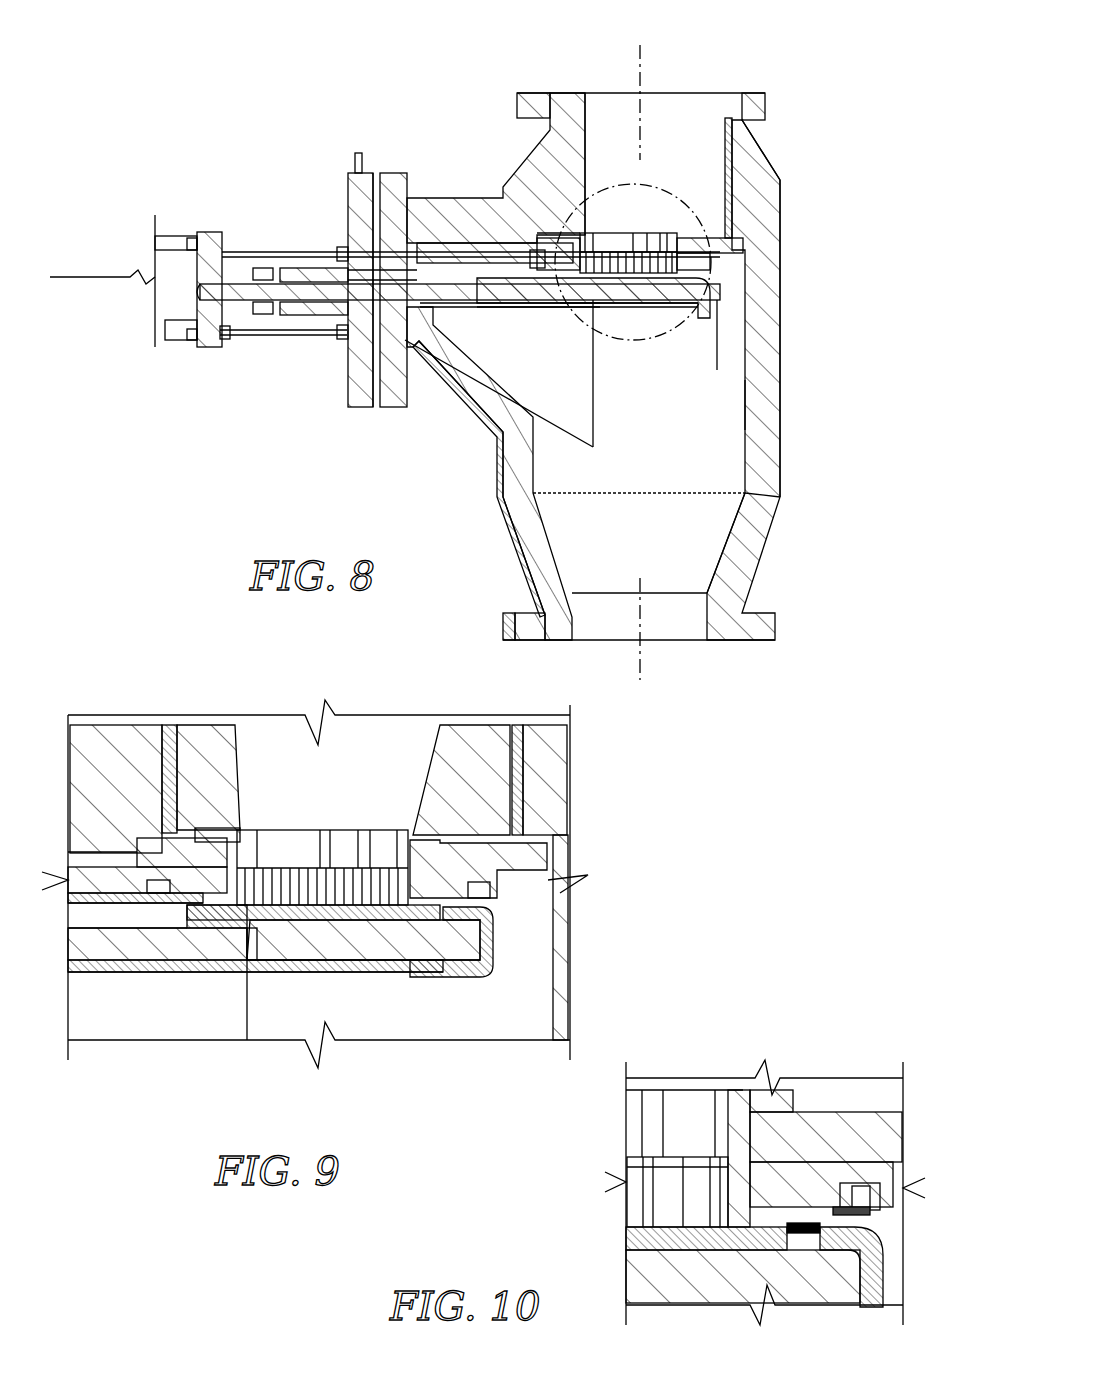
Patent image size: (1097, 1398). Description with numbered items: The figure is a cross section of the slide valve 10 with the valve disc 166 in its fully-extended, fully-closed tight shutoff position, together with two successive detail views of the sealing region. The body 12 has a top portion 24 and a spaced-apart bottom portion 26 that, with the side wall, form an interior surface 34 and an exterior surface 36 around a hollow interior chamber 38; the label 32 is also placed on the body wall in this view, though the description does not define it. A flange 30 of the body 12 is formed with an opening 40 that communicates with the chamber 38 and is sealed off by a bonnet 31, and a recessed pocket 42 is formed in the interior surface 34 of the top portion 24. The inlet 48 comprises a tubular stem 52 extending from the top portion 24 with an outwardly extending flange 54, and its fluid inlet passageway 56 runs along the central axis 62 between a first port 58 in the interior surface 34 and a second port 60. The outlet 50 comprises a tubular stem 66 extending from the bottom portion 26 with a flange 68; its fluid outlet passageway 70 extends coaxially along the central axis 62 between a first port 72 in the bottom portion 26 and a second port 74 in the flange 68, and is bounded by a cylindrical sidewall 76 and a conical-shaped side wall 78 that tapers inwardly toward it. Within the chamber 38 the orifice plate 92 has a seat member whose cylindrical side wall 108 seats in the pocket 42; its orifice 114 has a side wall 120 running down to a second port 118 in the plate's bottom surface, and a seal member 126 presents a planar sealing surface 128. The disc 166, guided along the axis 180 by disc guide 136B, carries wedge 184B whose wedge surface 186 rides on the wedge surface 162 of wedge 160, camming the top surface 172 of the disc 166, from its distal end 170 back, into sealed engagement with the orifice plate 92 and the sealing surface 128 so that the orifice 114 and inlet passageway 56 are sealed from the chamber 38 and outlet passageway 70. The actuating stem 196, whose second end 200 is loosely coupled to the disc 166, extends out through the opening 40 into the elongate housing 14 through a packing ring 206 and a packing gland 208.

In FIG. 8, the valve 10 is at (155, 130).
In FIG. 8, the body 12 is at (325, 148).
In FIG. 8, the elongate housing 14 is at (175, 212).
In FIG. 8, the top portion 24 is at (766, 192).
In FIG. 8, the bottom portion 26 is at (762, 562).
In FIG. 8, the flange 30 is at (725, 475).
In FIG. 8, the bonnet 31 is at (368, 378).
In FIG. 8, the body side wall 32 is at (765, 388).
In FIG. 8, the interior surface 34 is at (752, 425).
In FIG. 8, the exterior surface 36 is at (770, 470).
In FIG. 8, the hollow interior chamber 38 is at (737, 335).
In FIG. 8, the opening 40 is at (430, 376).
In FIG. 8, the recessed pocket 42 is at (737, 283).
In FIG. 8, the inlet 48 is at (752, 80).
In FIG. 8, the outlet 50 is at (750, 650).
In FIG. 8, the tubular stem 52 is at (742, 135).
In FIG. 8, the outwardly extending flange 54 is at (765, 105).
In FIG. 8, the fluid inlet passageway 56 is at (602, 98).
In FIG. 8, the first port 58 is at (658, 238).
In FIG. 8, the second port 60 is at (680, 250).
In FIG. 8, the central axis 62 is at (645, 55).
In FIG. 8, the tubular stem 66 is at (760, 592).
In FIG. 8, the outwardly extending flange 68 is at (780, 630).
In FIG. 8, the fluid outlet passageway 70 is at (615, 608).
In FIG. 8, the first port 72 is at (770, 505).
In FIG. 8, the second port 74 is at (712, 612).
In FIG. 8, the cylindrical sidewall 76 is at (700, 600).
In FIG. 8, the conical-shaped side wall 78 is at (570, 578).
In FIG. 8, the orifice plate 92 is at (725, 264).
In FIG. 9, the orifice plate 92 is at (100, 712).
In FIG. 10, the orifice plate 92 is at (812, 1135).
In FIG. 8, the cylindrical side wall 108 is at (743, 242).
In FIG. 9, the cylindrical side wall 108 is at (134, 865).
In FIG. 8, the orifice 114 is at (620, 195).
In FIG. 9, the orifice 114 is at (385, 752).
In FIG. 10, the orifice 114 is at (640, 1082).
In FIG. 9, the second port 118 is at (240, 828).
In FIG. 10, the second port 118 is at (720, 1140).
In FIG. 9, the side wall 120 is at (240, 772).
In FIG. 10, the side wall 120 is at (725, 1120).
In FIG. 9, the seal member 126 is at (567, 848).
In FIG. 10, the seal member 126 is at (898, 1170).
In FIG. 10, the planar sealing surface 128 is at (878, 1212).
In FIG. 9, the disc guide 136B is at (205, 1010).
In FIG. 8, the wedge 160 is at (668, 378).
In FIG. 9, the wedge 160 is at (440, 990).
In FIG. 9, the wedge surface 162 is at (285, 940).
In FIG. 8, the valve disc 166 is at (717, 305).
In FIG. 9, the valve disc 166 is at (255, 1036).
In FIG. 10, the valve disc 166 is at (683, 1318).
In FIG. 9, the distal end 170 is at (498, 935).
In FIG. 10, the distal end 170 is at (890, 1270).
In FIG. 8, the top surface 172 is at (638, 232).
In FIG. 9, the top surface 172 is at (332, 862).
In FIG. 10, the top surface 172 is at (660, 1160).
In FIG. 8, the axis 180 is at (90, 280).
In FIG. 8, the wedge 184B is at (662, 320).
In FIG. 9, the wedge 184B is at (365, 955).
In FIG. 9, the wedge surface 186 is at (395, 1005).
In FIG. 8, the actuating stem 196 is at (470, 270).
In FIG. 8, the second end 200 is at (548, 302).
In FIG. 9, the second end 200 is at (125, 945).
In FIG. 8, the packing ring 206 is at (330, 300).
In FIG. 8, the packing gland 208 is at (300, 300).